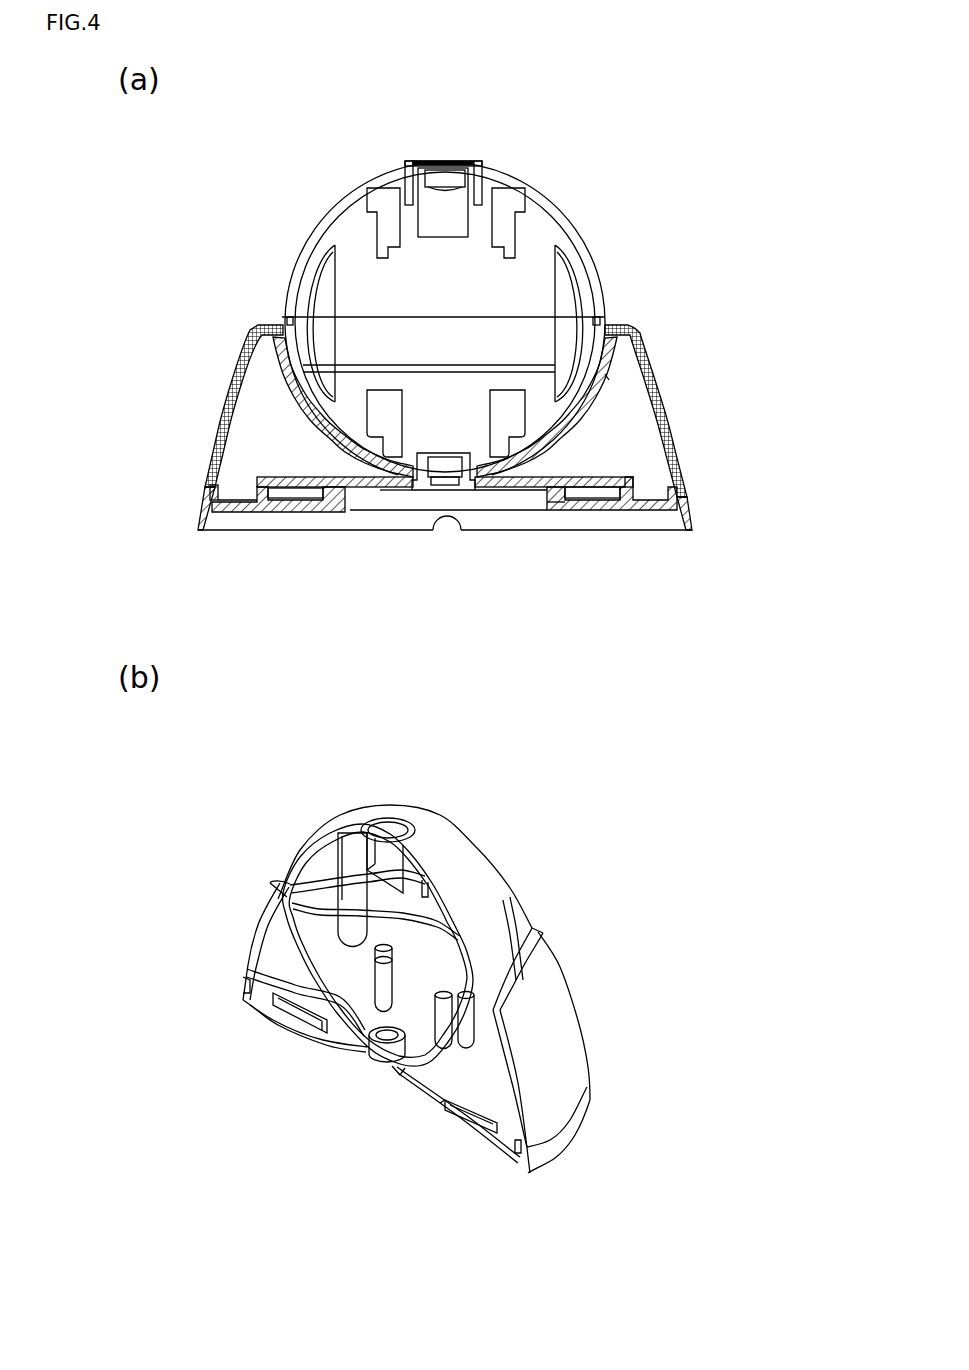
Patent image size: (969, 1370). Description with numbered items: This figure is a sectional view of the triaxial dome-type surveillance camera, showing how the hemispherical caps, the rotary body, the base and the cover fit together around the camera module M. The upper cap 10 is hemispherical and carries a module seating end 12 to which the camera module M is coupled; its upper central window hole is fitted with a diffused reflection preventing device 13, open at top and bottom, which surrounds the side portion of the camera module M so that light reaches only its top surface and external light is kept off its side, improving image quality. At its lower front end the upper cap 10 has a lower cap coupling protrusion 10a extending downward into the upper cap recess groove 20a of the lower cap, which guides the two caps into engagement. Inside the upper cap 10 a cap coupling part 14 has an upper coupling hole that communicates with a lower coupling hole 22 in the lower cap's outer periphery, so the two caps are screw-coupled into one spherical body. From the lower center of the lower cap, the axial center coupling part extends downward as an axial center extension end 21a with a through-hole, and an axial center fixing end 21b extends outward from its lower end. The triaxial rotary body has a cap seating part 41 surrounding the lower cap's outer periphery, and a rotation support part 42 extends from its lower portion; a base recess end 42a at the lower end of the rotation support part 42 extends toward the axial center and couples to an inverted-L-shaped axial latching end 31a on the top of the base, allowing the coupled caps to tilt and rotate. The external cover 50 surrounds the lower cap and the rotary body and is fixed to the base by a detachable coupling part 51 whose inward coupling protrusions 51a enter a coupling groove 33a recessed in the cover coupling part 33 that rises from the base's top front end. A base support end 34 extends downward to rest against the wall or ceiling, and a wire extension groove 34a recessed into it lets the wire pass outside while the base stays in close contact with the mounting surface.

The upper cap 10 is at (465, 838).
The lower cap coupling protrusion 10a is at (597, 317).
The module seating end 12 is at (510, 204).
The diffused reflection preventing device 13 is at (478, 161).
The cap coupling part 14 is at (572, 277).
The camera module M is at (427, 205).
The upper cap recess groove 20a is at (288, 318).
The axial center extension end 21a is at (421, 482).
The axial center fixing end 21b is at (466, 487).
The lower coupling hole 22 is at (560, 373).
The axial latching end 31a is at (547, 503).
The cover coupling part 33 is at (205, 495).
The coupling groove 33a is at (209, 485).
The base support end 34 is at (690, 520).
The wire extension groove 34a is at (450, 530).
The cap seating part 41 is at (607, 377).
The rotation support part 42 is at (623, 474).
The base recess end 42a is at (597, 511).
The external cover 50 is at (232, 375).
The detachable coupling part 51 is at (220, 495).
The coupling protrusion 51a is at (202, 487).